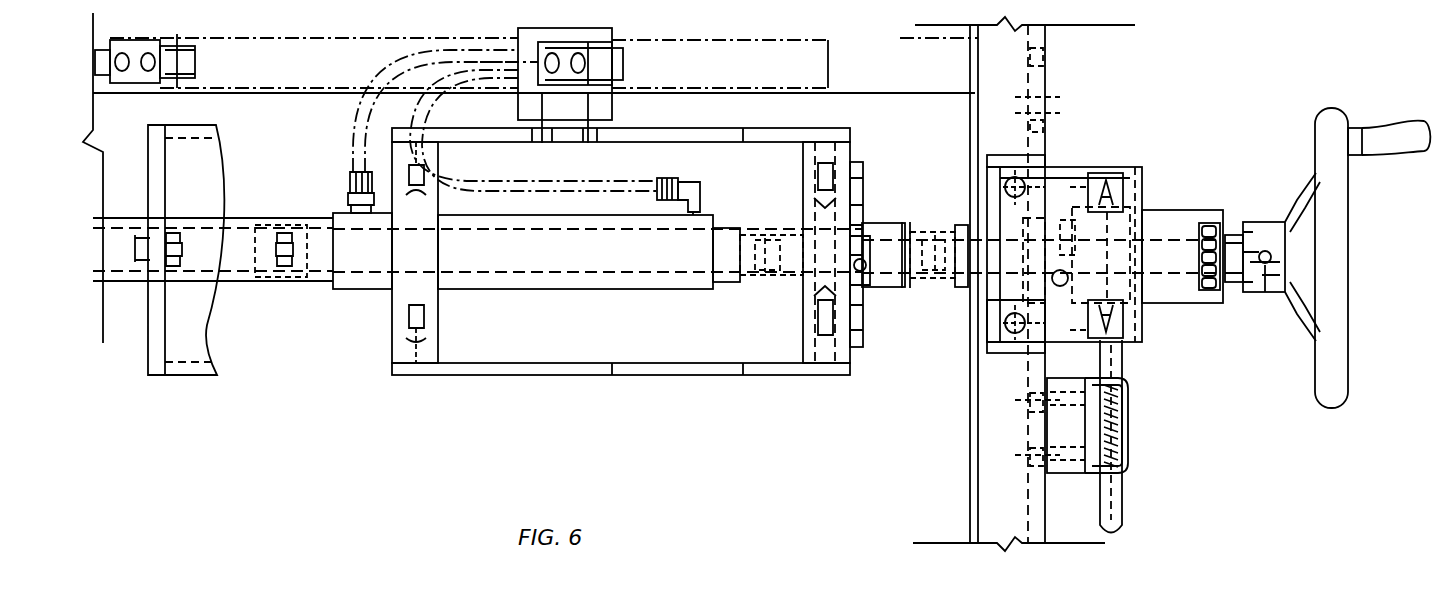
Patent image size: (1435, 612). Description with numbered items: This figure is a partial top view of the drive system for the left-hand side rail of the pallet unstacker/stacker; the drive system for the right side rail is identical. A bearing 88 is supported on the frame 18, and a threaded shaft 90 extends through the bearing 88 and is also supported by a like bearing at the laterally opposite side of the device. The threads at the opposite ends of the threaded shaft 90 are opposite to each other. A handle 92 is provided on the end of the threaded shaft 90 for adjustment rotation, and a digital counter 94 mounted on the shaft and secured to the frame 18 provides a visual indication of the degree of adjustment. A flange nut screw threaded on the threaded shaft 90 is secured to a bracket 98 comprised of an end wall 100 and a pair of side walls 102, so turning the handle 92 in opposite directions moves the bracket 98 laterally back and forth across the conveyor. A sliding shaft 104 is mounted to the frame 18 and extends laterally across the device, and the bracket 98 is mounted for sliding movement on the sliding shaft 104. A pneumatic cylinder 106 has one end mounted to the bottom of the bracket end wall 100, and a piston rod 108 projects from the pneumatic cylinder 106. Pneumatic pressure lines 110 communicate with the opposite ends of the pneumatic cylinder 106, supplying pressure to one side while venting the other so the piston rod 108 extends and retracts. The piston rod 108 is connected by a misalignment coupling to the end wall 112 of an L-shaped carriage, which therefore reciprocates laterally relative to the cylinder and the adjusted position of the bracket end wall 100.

The frame 18 is at (1010, 145).
The bearing 88 is at (985, 297).
The threaded shaft 90 is at (1167, 270).
The handle 92 is at (1338, 353).
The digital counter 94 is at (1170, 222).
The bracket 98 is at (806, 388).
The end wall 100 is at (855, 358).
The side walls 102 is at (789, 130).
The sliding shaft 104 is at (887, 225).
The pneumatic cylinder 106 is at (545, 292).
The piston rod 108 is at (288, 278).
The pneumatic pressure lines 110 is at (352, 110).
The end wall 112 is at (148, 198).